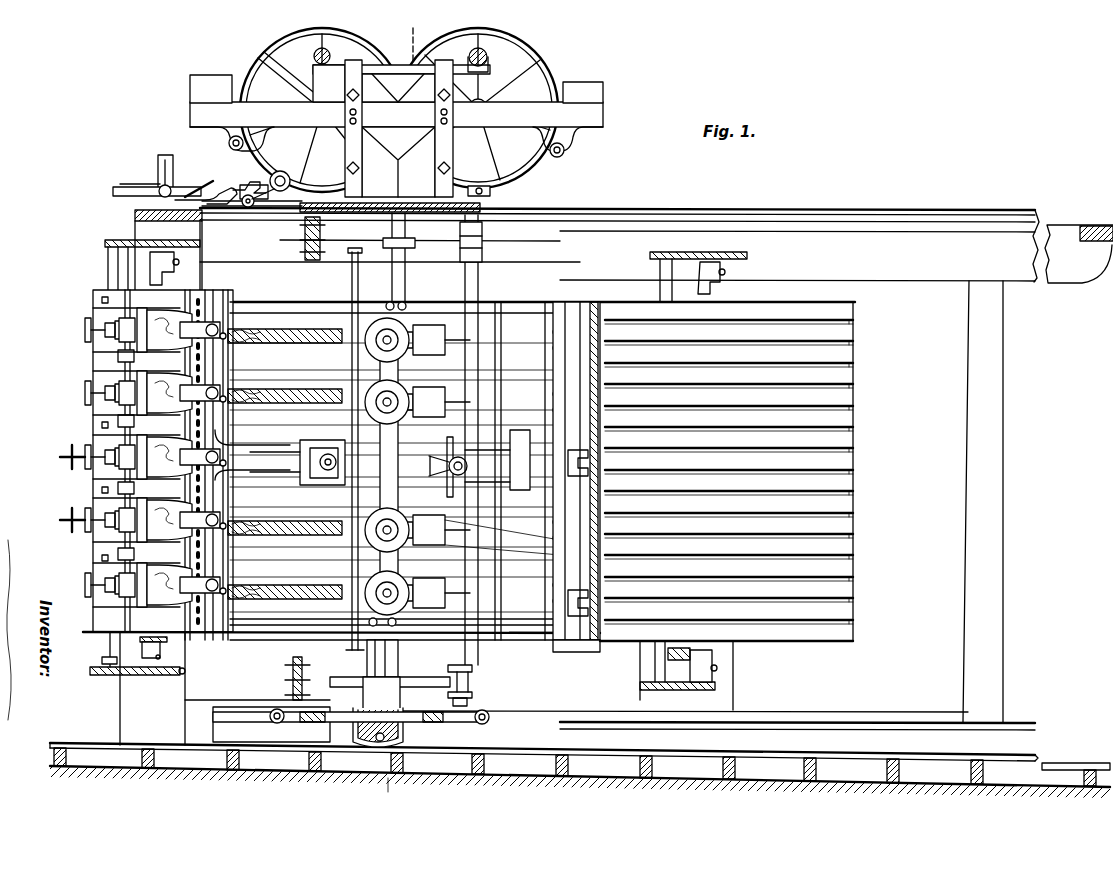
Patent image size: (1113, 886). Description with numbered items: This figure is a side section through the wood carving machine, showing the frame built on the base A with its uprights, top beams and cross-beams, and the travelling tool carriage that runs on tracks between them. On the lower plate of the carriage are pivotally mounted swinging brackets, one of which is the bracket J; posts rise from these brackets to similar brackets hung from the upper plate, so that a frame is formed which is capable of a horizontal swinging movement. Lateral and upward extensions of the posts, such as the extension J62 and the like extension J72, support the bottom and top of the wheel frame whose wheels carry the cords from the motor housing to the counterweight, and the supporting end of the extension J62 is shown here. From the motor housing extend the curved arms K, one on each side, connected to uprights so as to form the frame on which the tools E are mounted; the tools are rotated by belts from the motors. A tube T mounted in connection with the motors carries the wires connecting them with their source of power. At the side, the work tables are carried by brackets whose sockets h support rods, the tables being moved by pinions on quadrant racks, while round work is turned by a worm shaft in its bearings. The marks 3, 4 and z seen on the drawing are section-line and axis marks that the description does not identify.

The base A is at (1075, 752).
The shaft 3 is at (190, 100).
The center line z is at (419, 41).
The extension J62 is at (320, 58).
The extension J72 is at (490, 50).
The swinging bracket J is at (484, 250).
The tube T is at (330, 287).
The section line 4 is at (1026, 413).
The tools E is at (522, 440).
The curved arms K is at (280, 478).
The sockets h is at (110, 648).